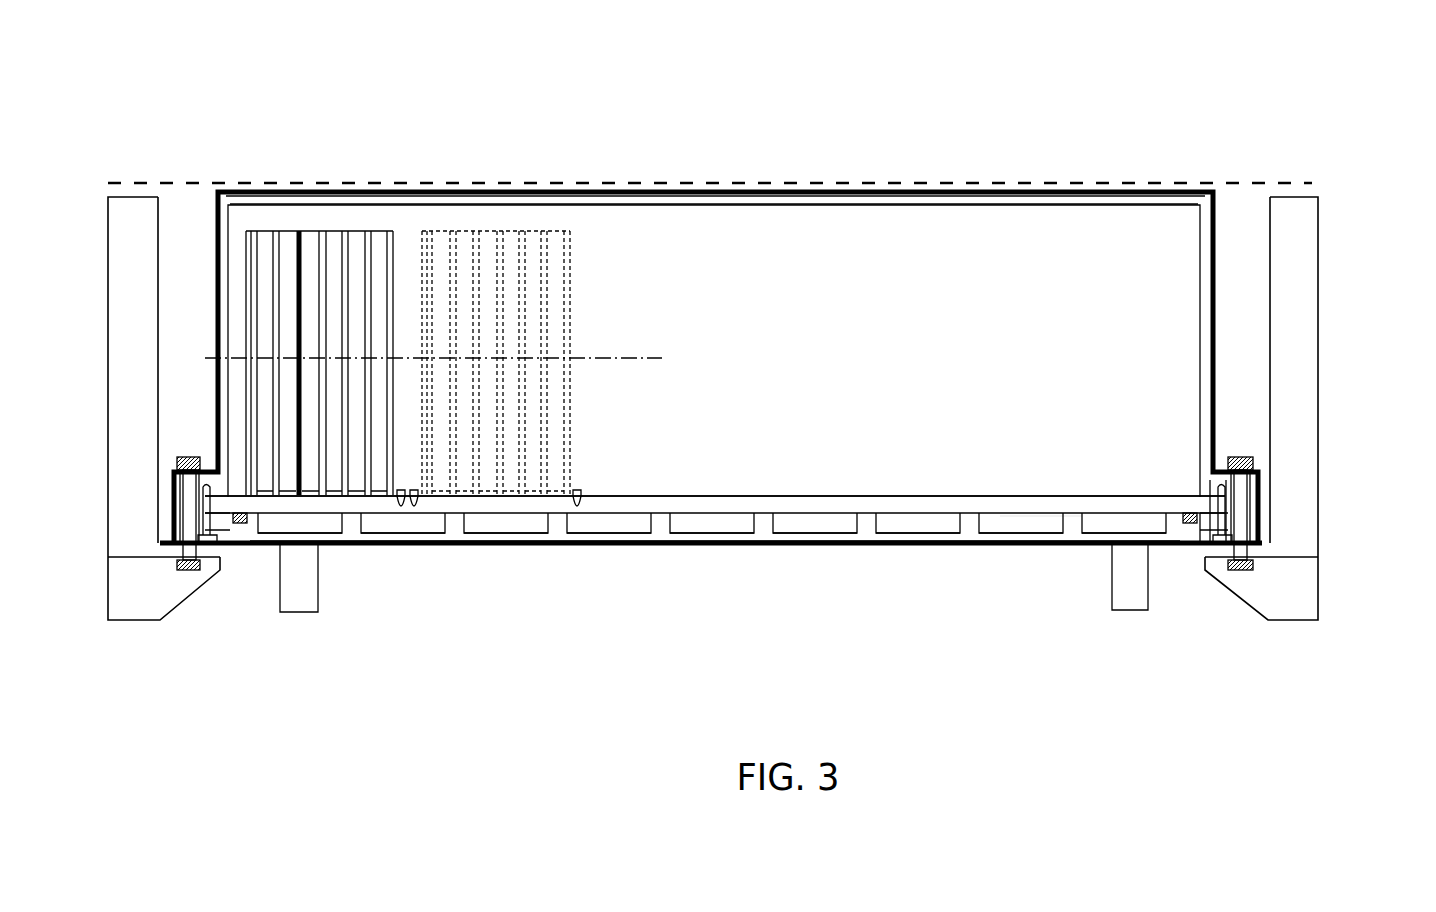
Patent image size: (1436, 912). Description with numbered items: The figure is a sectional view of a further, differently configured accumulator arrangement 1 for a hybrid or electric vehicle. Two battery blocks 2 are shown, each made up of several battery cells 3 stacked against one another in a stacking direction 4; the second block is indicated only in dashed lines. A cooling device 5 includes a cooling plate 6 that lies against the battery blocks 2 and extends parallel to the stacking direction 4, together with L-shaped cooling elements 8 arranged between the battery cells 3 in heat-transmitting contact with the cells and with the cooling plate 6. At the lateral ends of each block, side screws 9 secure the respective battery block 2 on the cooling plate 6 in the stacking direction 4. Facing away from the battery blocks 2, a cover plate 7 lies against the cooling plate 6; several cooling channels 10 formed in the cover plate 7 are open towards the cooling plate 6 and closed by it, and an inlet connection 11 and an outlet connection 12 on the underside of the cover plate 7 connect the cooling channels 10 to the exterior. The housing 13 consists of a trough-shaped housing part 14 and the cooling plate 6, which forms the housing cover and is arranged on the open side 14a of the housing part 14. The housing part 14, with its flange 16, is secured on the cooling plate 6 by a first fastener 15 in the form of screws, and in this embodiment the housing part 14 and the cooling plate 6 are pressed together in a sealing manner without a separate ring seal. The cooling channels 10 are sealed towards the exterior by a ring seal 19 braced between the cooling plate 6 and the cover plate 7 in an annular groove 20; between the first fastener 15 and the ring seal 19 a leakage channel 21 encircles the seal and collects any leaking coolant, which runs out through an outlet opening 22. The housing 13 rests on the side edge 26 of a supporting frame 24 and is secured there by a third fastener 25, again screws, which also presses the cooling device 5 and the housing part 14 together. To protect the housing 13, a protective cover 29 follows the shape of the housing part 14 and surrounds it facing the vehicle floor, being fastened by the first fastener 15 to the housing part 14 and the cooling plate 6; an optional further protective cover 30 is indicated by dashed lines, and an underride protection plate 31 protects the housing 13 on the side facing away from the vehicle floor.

The accumulator arrangement 1 is at (1246, 129).
The battery block 2 is at (319, 303).
The battery cell 3 is at (282, 231).
The stacking direction 4 is at (645, 356).
The cooling device 5 is at (715, 503).
The cooling plate 6 is at (703, 494).
The cover plate 7 is at (768, 535).
The cooling element 8 is at (368, 231).
The side screw 9 is at (400, 490).
The cooling channel 10 is at (820, 522).
The inlet connection 11 is at (297, 604).
The outlet connection 12 is at (1130, 602).
The housing 13 is at (979, 176).
The housing part 14 is at (886, 190).
The open side 14a is at (1010, 526).
The first fastener 15 is at (1240, 510).
The flange 16 is at (1252, 482).
The ring seal 19 is at (243, 540).
The annular groove 20 is at (185, 520).
The leakage channel 21 is at (1188, 515).
The outlet opening 22 is at (1200, 540).
The supporting frame 24 is at (1328, 318).
The third fastener 25 is at (1255, 545).
The side edge 26 is at (1237, 572).
The protective cover 29 is at (660, 181).
The further protective cover 30 is at (750, 170).
The underride protection plate 31 is at (660, 548).